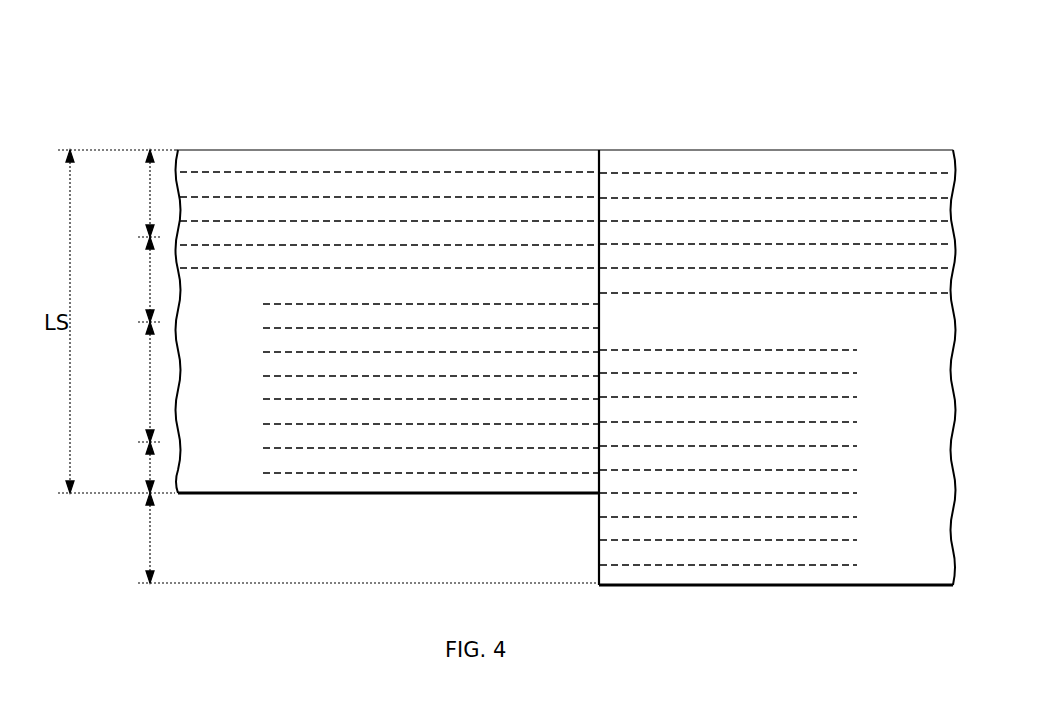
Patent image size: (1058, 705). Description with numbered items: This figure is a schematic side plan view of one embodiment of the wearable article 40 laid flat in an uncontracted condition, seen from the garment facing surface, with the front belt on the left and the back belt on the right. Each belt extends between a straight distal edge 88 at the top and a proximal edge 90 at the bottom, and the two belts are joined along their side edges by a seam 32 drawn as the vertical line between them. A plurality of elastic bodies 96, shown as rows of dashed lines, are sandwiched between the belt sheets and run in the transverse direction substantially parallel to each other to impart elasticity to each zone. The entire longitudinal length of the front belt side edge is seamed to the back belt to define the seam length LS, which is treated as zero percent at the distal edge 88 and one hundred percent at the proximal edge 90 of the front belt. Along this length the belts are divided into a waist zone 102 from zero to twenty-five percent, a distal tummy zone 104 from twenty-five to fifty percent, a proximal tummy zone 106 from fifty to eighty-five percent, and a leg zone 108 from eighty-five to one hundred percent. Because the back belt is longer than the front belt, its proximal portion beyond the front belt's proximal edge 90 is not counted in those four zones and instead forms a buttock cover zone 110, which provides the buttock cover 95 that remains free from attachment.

The seat trim assembly 40 is at (447, 63).
The distal edge 88 is at (293, 150).
The seam 32 is at (599, 150).
The proximal edge 90 is at (395, 493).
The elastic body 96 is at (219, 169).
The buttock cover 95 is at (584, 545).
The waist zone 102 is at (148, 190).
The distal tummy zone 104 is at (148, 276).
The proximal tummy zone 106 is at (148, 385).
The leg zone 108 is at (148, 464).
The buttock cover zone 110 is at (148, 540).